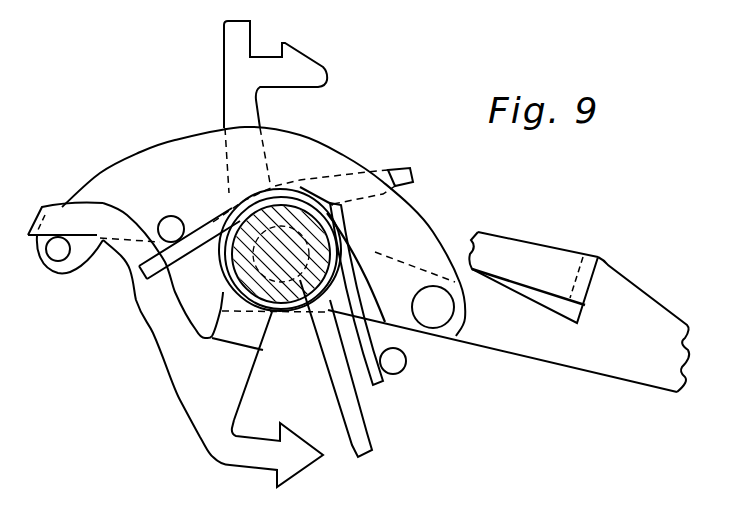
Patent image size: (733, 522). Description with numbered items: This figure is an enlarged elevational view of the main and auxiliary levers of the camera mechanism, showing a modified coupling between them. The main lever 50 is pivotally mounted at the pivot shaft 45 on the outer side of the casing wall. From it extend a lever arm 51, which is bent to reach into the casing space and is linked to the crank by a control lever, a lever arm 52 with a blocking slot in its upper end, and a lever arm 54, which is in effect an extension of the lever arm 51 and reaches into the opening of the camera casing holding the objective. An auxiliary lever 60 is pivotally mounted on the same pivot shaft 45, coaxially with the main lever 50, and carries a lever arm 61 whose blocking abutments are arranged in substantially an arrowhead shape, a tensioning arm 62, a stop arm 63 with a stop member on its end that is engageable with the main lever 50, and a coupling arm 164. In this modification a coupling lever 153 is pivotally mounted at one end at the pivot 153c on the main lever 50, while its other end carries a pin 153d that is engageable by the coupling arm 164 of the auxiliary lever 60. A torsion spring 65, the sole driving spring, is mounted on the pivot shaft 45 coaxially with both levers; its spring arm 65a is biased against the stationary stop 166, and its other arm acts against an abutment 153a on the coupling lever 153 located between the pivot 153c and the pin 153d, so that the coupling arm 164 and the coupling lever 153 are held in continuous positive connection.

The pivot shaft 45 is at (289, 302).
The main lever 50 is at (530, 343).
The lever arm 51 is at (519, 262).
The lever arm 52 is at (234, 70).
The lever arm 54 is at (633, 363).
The auxiliary lever 60 is at (250, 332).
The lever arm 61 is at (255, 452).
The tensioning arm 62 is at (356, 428).
The stop arm 63 is at (387, 172).
The torsion spring 65 is at (222, 253).
The spring arm 65a is at (206, 221).
The coupling lever 153 is at (204, 145).
The abutment 153a is at (168, 227).
The pivot 153c is at (435, 310).
The pin 153d is at (62, 252).
The coupling arm 164 is at (47, 215).
The stationary stop 166 is at (395, 363).